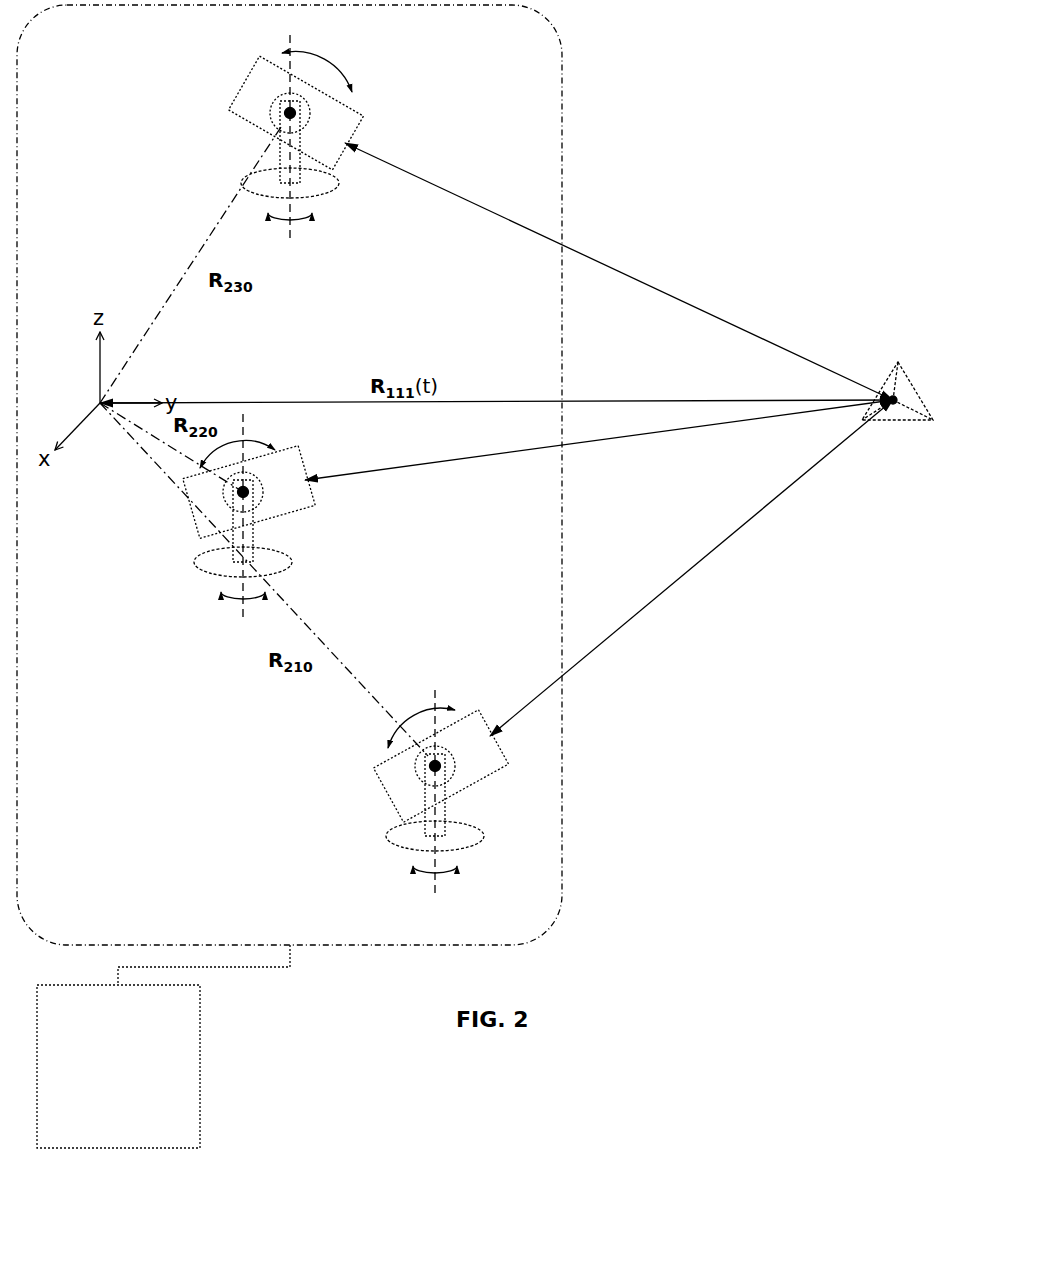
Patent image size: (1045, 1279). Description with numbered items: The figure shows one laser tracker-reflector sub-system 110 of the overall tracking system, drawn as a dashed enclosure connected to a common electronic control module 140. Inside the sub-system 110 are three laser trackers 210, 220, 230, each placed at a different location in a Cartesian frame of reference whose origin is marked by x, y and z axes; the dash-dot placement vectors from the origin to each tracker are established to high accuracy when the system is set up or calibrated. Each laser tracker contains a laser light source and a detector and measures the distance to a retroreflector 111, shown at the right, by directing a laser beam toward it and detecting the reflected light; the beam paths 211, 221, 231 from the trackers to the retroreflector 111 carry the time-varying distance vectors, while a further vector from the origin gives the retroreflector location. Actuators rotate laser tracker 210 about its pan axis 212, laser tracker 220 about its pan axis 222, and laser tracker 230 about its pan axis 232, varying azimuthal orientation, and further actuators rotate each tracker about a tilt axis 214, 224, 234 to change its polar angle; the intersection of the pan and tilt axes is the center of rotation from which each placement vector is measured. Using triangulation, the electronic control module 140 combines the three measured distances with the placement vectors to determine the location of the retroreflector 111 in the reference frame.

The sub-system 110 is at (107, 921).
The retroreflector 111 is at (898, 363).
The electronic control module 140 is at (140, 1079).
The laser tracker 210 is at (403, 790).
The line of sight of first camera 211 is at (677, 585).
The pan axis 212 is at (436, 885).
The tilt axis 214 is at (437, 768).
The laser tracker 220 is at (208, 500).
The line of sight of second camera 221 is at (587, 445).
The pan axis 222 is at (243, 617).
The tilt pivot of second camera 224 is at (245, 494).
The laser tracker 230 is at (255, 92).
The line of sight of third camera 231 is at (607, 265).
The pan axis 232 is at (288, 230).
The tilt pivot of third camera 234 is at (285, 113).